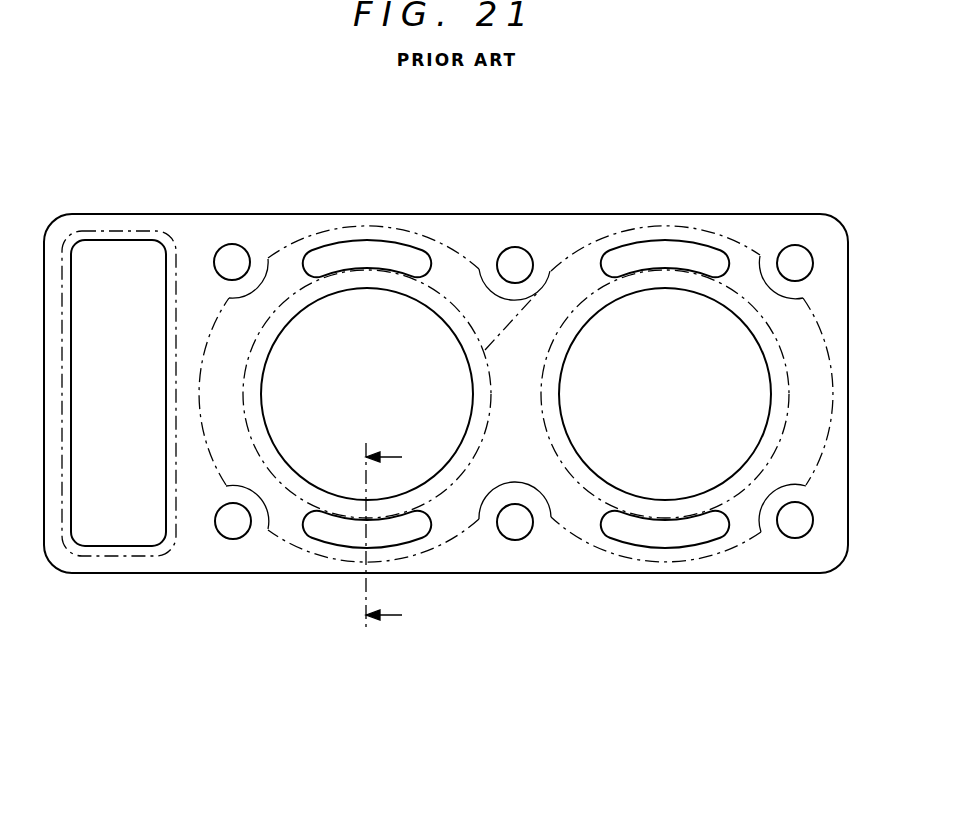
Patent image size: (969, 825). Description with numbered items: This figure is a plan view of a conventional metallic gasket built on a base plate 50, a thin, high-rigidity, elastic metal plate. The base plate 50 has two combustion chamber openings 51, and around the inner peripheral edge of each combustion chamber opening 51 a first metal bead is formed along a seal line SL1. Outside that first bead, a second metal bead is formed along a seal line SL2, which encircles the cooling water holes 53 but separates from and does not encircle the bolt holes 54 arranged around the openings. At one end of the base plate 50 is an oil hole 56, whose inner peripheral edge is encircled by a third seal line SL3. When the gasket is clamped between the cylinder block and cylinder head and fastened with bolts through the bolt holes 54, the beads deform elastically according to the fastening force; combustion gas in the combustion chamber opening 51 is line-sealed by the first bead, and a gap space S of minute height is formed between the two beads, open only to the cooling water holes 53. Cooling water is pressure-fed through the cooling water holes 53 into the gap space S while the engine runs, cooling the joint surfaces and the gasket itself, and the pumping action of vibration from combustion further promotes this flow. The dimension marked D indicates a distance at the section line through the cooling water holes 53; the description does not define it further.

The base plate 50 is at (483, 232).
The combustion chamber opening 51 is at (420, 306).
The cooling water hole 53 is at (345, 248).
The bolt hole 54 is at (232, 246).
The oil hole 56 is at (134, 546).
The seal line SL1 is at (560, 258).
The seal line SL2 is at (616, 229).
The third seal line SL3 is at (60, 558).
The gap space S is at (752, 532).
The distance / section line D- D is at (394, 536).